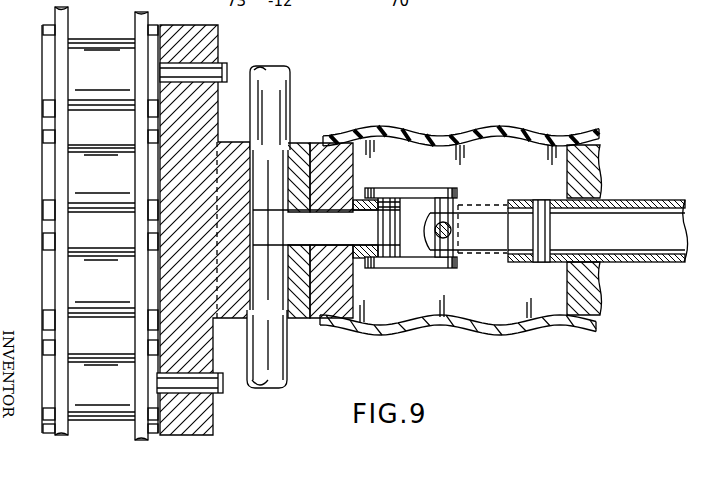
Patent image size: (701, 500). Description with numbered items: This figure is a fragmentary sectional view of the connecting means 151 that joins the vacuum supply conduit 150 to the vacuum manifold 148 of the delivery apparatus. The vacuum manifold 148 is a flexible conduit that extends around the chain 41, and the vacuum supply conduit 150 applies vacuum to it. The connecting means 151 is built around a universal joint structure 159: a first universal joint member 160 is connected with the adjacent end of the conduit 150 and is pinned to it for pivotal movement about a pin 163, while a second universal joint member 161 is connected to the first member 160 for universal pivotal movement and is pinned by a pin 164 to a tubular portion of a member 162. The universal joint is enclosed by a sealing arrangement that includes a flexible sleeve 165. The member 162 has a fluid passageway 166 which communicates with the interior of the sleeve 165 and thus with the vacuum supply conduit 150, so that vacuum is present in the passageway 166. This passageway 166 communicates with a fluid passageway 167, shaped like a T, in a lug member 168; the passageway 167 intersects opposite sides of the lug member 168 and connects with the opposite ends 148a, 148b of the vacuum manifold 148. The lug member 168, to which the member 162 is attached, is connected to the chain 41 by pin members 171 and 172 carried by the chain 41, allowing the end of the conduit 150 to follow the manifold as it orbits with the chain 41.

The chain 41 is at (56, 42).
The vacuum manifold 148 is at (289, 90).
The end of vacuum manifold 148a is at (283, 109).
The end of vacuum manifold 148b is at (288, 363).
The vacuum supply conduit 150 is at (636, 262).
The connecting means 151 is at (400, 134).
The universal joint structure 159 is at (456, 189).
The first universal joint member 160 is at (532, 262).
The second universal joint member 161 is at (427, 268).
The member 162 is at (334, 322).
The pin 163 is at (545, 232).
The pin 164 is at (392, 225).
The flexible sleeve 165 is at (518, 130).
The fluid passageway 166 is at (350, 218).
The fluid passageway 167 is at (262, 218).
The lug member 168 is at (202, 354).
The pin member 171 is at (228, 73).
The pin member 172 is at (220, 393).